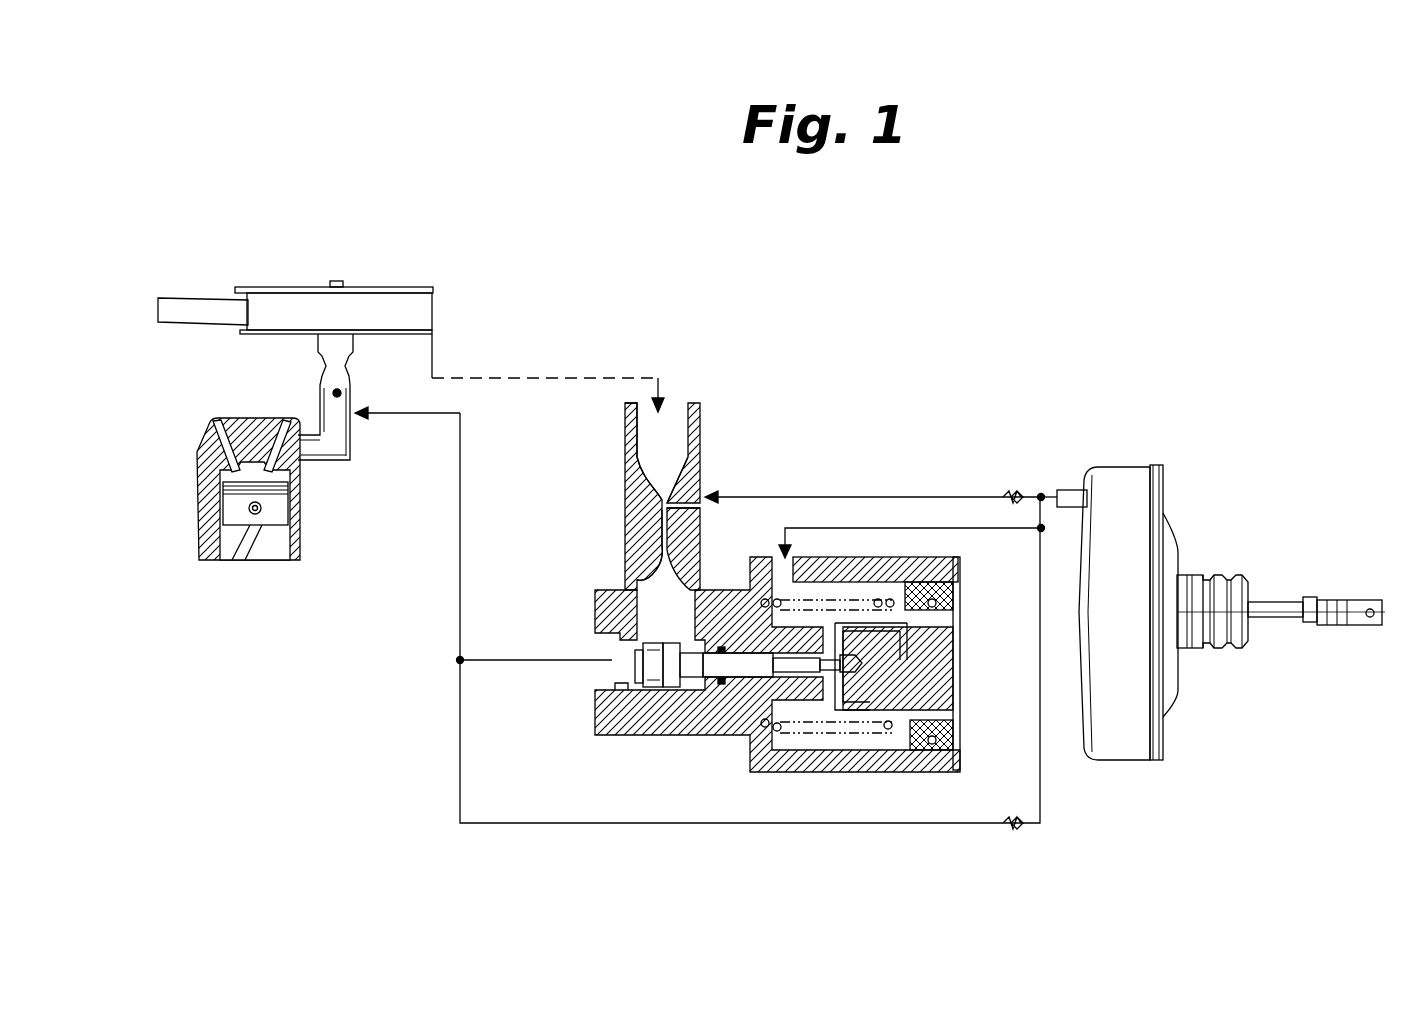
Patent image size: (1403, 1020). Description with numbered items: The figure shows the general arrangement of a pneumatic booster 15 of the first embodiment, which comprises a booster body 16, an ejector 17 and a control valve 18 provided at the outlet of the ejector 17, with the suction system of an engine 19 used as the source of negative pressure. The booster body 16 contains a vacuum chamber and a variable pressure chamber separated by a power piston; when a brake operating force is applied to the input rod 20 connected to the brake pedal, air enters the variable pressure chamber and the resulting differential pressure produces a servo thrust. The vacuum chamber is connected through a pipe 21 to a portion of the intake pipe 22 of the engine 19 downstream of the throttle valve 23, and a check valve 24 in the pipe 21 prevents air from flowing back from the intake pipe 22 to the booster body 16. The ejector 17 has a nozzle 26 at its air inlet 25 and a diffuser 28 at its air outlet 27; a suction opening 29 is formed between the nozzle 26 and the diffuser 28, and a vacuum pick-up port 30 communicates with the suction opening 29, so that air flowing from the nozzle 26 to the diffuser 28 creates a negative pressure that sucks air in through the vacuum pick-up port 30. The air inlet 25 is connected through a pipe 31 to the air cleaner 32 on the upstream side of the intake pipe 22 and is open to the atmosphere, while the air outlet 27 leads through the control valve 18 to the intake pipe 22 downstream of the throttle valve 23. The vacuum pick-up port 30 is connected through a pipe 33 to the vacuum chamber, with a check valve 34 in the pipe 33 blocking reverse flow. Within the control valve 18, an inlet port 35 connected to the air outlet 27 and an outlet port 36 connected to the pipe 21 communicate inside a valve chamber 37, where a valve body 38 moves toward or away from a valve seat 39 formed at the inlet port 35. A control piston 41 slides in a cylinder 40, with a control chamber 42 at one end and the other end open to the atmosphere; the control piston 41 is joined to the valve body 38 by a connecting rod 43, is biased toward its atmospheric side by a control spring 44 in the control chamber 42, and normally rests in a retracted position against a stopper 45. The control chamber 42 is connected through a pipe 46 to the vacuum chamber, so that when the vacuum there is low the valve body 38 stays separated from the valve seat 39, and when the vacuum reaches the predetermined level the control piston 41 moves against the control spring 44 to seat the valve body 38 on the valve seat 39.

The pneumatic booster 15 is at (839, 288).
The booster body 16 is at (1160, 468).
The ejector 17 is at (704, 428).
The control valve 18 is at (681, 722).
The engine 19 is at (200, 505).
The input rod 20 is at (1282, 602).
The pipe 21 is at (768, 826).
The intake pipe 22 is at (350, 462).
The throttle valve 23 is at (337, 393).
The check valve 24 is at (1022, 834).
The air inlet 25 is at (678, 422).
The nozzle 26 is at (647, 490).
The air outlet 27 is at (652, 576).
The diffuser 28 is at (648, 534).
The suction opening 29 is at (685, 498).
The vacuum pick-up port 30 is at (693, 503).
The pipe 31 is at (525, 378).
The air cleaner 32 is at (385, 306).
The pipe 33 is at (885, 496).
The check valve 34 is at (1018, 490).
The inlet port 35 is at (620, 614).
The outlet port 36 is at (622, 688).
The valve chamber 37 is at (663, 690).
The valve body 38 is at (640, 692).
The valve seat 39 is at (612, 659).
The cylinder 40 is at (845, 742).
The control piston 41 is at (958, 640).
The control chamber 42 is at (810, 623).
The connecting rod 43 is at (740, 672).
The control spring 44 is at (880, 586).
The stopper 45 is at (960, 735).
The pipe 46 is at (846, 526).